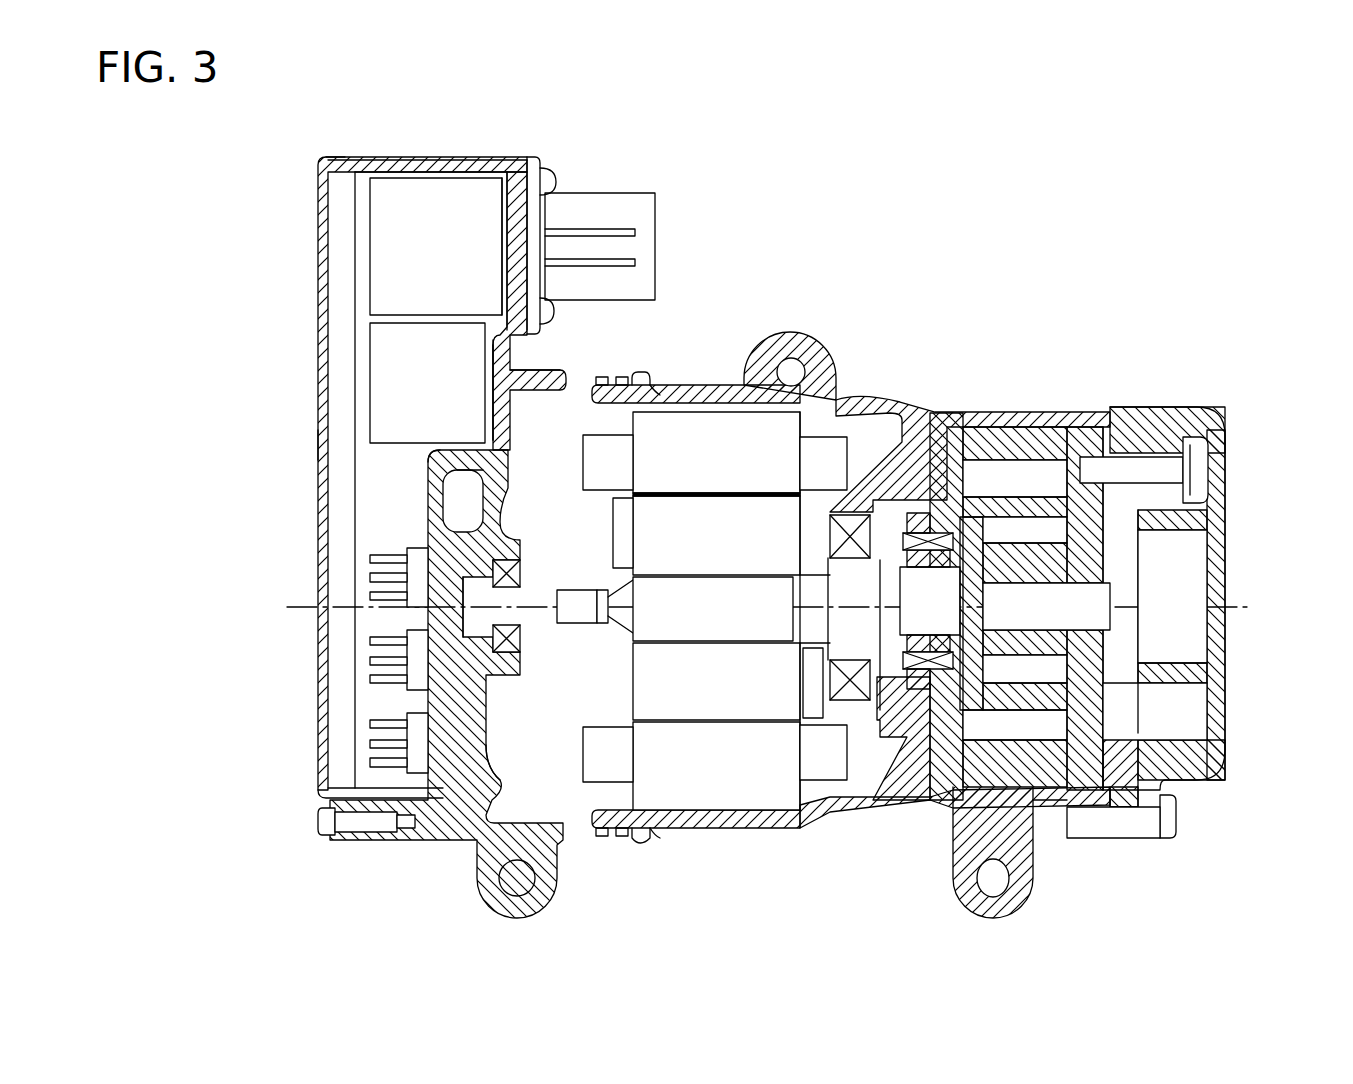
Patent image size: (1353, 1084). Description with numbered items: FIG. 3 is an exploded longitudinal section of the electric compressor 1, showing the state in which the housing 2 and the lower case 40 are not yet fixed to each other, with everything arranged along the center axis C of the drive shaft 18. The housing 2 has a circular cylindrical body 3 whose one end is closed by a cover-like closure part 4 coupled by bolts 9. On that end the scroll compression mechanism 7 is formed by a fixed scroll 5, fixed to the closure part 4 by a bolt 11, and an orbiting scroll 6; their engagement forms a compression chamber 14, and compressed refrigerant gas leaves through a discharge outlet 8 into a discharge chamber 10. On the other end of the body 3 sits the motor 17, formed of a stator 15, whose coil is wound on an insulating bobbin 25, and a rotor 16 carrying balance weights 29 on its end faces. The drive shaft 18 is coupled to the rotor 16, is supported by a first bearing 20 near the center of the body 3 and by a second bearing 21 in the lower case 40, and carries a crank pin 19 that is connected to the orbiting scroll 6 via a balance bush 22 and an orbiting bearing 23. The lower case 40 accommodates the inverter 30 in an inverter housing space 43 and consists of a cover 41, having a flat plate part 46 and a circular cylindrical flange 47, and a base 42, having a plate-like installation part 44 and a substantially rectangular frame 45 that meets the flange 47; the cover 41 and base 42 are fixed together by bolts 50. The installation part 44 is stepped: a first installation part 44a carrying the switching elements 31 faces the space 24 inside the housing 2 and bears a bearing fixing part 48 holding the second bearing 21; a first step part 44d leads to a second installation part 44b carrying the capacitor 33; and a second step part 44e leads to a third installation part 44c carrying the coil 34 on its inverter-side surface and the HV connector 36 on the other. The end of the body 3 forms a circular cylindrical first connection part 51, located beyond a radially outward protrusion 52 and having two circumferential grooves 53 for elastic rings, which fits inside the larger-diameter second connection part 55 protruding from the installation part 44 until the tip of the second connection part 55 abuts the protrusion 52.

The electric compressor 1 is at (1135, 288).
The housing 2 is at (800, 322).
The body 3 is at (902, 410).
The closure part 4 is at (1165, 418).
The fixed scroll 5 is at (1087, 765).
The orbiting scroll 6 is at (948, 797).
The scroll compression mechanism 7 is at (1050, 826).
The discharge outlet 8 is at (1095, 610).
The bolts 9 is at (1172, 818).
The discharge chamber 10 is at (1195, 640).
The bolt 11 is at (1200, 470).
The compression chamber 14 is at (1030, 520).
The stator 15 is at (778, 712).
The rotor 16 is at (830, 757).
The motor 17 is at (745, 836).
The drive shaft 18 is at (745, 592).
The crank pin 19 is at (915, 588).
The first bearing 20 is at (838, 540).
The second bearing 21 is at (520, 575).
The balance bush 22 is at (995, 585).
The orbiting bearing 23 is at (945, 533).
The space 24 is at (579, 705).
The insulating bobbin 25 is at (830, 455).
The balance weights 29 is at (625, 505).
The inverter 30 is at (398, 158).
The switching elements 31 is at (410, 588).
The capacitor 33 is at (380, 378).
The coil 34 is at (380, 243).
The HV connector 36 is at (608, 200).
The lower case 40 is at (517, 137).
The cover 41 is at (318, 298).
The base 42 is at (441, 158).
The inverter housing space 43 is at (378, 497).
The installation part 44 is at (412, 516).
The first installation part 44a is at (440, 733).
The second installation part 44b is at (500, 412).
The third installation part 44c is at (512, 205).
The first step part 44d is at (470, 465).
The second step part 44e is at (503, 335).
The frame 45 is at (490, 167).
The flat plate part 46 is at (318, 443).
The flange 47 is at (340, 160).
The bearing fixing part 48 is at (515, 665).
The bolts 50 is at (325, 822).
The first connection part 51 is at (632, 400).
The protrusion 52 is at (645, 378).
The grooves 53 is at (605, 385).
The second connection part 55 is at (530, 375).
The center axis C is at (1250, 605).